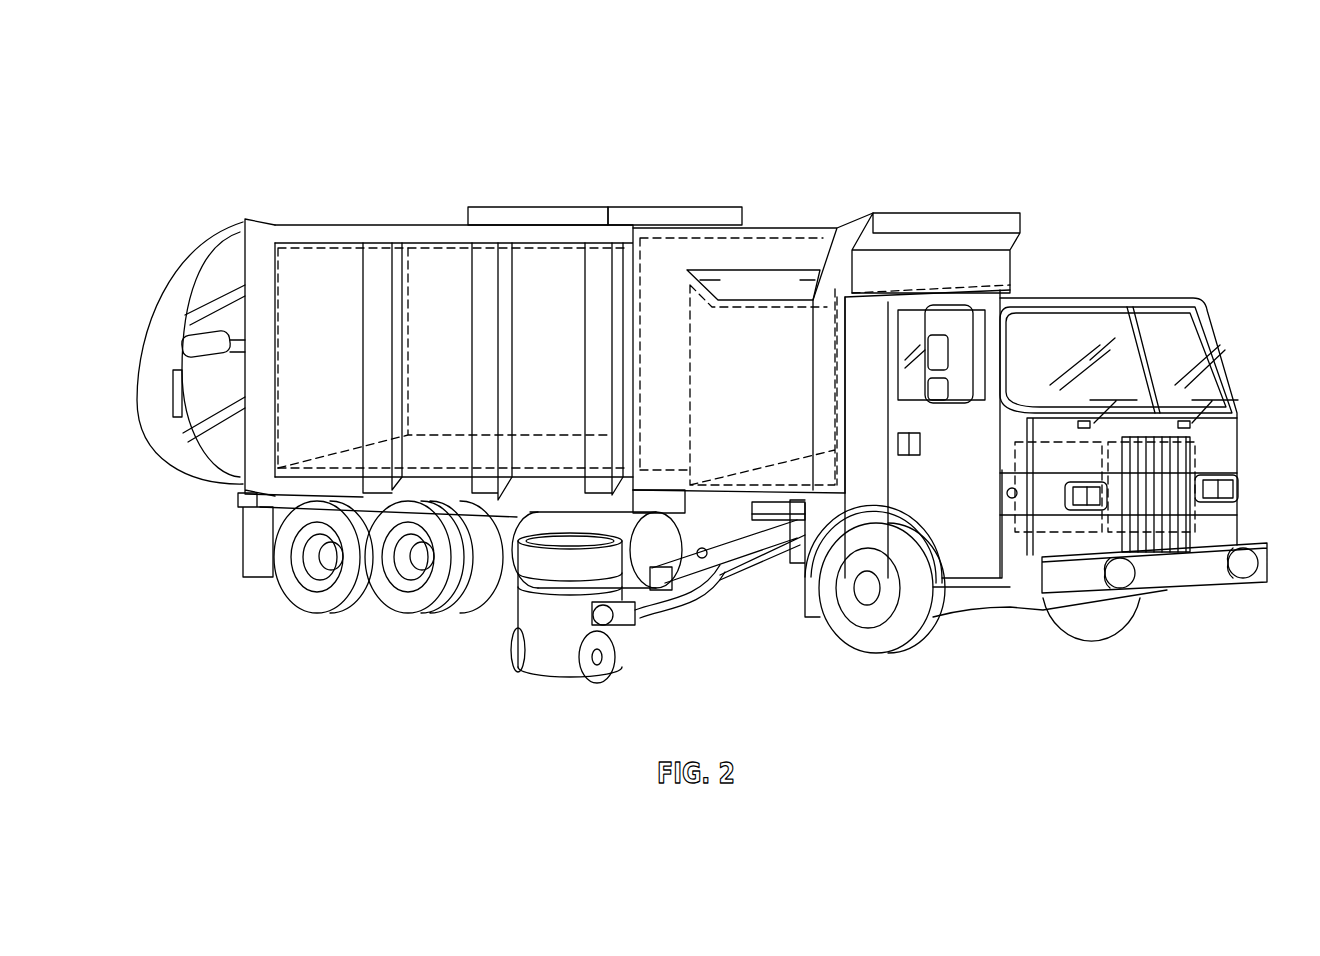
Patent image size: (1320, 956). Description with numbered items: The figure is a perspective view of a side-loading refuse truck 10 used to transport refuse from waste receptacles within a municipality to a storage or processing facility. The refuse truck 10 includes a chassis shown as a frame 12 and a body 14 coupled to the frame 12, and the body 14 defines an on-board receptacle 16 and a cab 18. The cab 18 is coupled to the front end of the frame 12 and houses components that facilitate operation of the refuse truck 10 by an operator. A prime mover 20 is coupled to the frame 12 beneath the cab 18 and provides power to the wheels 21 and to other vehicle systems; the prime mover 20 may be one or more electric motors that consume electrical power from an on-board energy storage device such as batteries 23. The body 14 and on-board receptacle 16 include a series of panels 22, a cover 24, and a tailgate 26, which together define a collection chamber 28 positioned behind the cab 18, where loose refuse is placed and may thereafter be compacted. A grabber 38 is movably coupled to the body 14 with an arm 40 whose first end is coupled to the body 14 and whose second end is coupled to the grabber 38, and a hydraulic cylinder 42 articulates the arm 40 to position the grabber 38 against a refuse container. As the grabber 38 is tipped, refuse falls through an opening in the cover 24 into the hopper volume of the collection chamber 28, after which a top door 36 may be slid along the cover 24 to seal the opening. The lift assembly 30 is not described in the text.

The refuse truck 10 is at (1113, 124).
The frame 12 is at (988, 612).
The body 14 is at (508, 202).
The on-board receptacle 16 is at (392, 224).
The cab 18 is at (1095, 298).
The prime mover 20 is at (1087, 497).
The wheels 21 is at (300, 590).
The panels 22 is at (312, 265).
The batteries 23 is at (1147, 487).
The cover 24 is at (440, 225).
The tailgate 26 is at (195, 270).
The collection chamber 28 is at (572, 275).
The lift assembly 30 is at (714, 690).
The top door 36 is at (655, 207).
The grabber 38 is at (617, 615).
The arm 40 is at (718, 565).
The hydraulic cylinder 42 is at (765, 562).